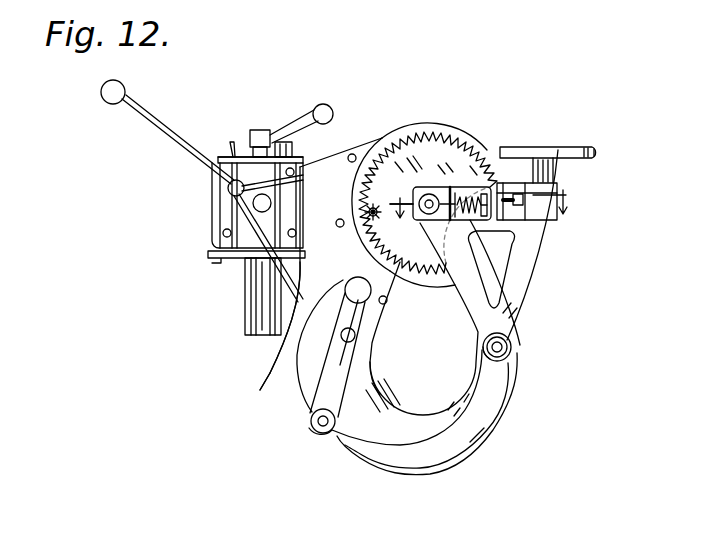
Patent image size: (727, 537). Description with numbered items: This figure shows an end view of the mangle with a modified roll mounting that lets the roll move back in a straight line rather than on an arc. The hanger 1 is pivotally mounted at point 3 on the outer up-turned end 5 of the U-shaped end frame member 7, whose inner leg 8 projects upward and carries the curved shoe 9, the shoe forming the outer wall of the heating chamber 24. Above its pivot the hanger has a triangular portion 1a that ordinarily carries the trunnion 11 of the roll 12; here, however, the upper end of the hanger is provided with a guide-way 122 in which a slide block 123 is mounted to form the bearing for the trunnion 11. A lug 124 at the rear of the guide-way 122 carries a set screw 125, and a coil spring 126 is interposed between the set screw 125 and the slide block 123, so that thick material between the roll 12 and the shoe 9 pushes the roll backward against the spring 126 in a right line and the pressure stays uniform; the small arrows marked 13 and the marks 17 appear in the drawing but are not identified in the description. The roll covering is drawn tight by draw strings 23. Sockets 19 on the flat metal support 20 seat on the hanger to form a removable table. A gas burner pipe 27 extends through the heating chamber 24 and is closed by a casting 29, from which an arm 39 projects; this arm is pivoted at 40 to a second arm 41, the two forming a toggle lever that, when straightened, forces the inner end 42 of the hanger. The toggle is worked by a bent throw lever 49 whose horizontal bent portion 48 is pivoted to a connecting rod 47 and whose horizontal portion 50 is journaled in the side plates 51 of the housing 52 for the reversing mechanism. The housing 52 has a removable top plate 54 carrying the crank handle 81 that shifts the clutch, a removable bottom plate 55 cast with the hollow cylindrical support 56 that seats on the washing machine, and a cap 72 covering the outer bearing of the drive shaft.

The hanger 1 is at (497, 403).
The triangular portion of the hanger 1a is at (508, 243).
The pivot point 3 is at (512, 356).
The outer up-turned end 5 is at (515, 366).
The U-shaped end frame member 7 is at (397, 417).
The inner leg 8 is at (370, 341).
The shoe 9 is at (390, 292).
The trunnion 11 is at (430, 196).
The roll 12 is at (412, 130).
The direction arrows 13 is at (482, 220).
The plate 17 is at (397, 178).
The socket 19 is at (548, 160).
The flat metal support 20 is at (578, 147).
The draw string 23 is at (371, 216).
The heating chamber 24 is at (300, 333).
The gas burner pipe 27 is at (251, 390).
The casting 29 is at (352, 277).
The arm 39 is at (358, 311).
The pivotal connection 40 is at (352, 338).
The arm 41 is at (330, 380).
The inner end of the hanger 42 is at (333, 433).
The connecting rod 47 is at (283, 270).
The horizontal bent portion 48 is at (228, 188).
The bent throw lever 49 is at (137, 100).
The horizontal portion 50 is at (268, 183).
The side plate 51 is at (226, 212).
The housing 52 is at (203, 184).
The removable top plate 54 is at (215, 158).
The removable bottom plate 55 is at (210, 255).
The hollow cylindrical support 56 is at (244, 320).
The cap 72 is at (271, 204).
The crank handle 81 is at (281, 135).
The guide-way 122 is at (470, 192).
The slide block 123 is at (449, 187).
The lug 124 is at (500, 190).
The set screw 125 is at (523, 198).
The coil spring 126 is at (484, 254).